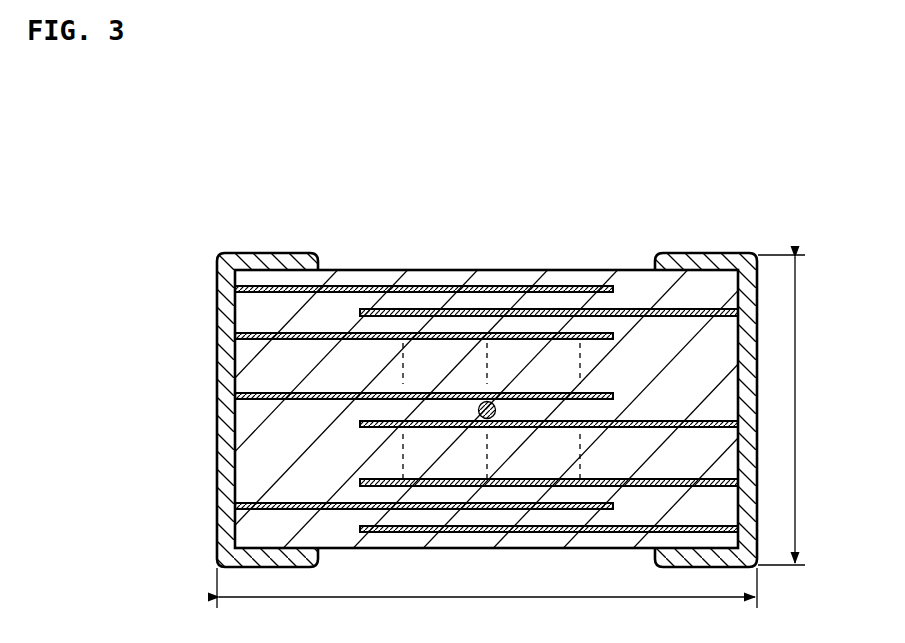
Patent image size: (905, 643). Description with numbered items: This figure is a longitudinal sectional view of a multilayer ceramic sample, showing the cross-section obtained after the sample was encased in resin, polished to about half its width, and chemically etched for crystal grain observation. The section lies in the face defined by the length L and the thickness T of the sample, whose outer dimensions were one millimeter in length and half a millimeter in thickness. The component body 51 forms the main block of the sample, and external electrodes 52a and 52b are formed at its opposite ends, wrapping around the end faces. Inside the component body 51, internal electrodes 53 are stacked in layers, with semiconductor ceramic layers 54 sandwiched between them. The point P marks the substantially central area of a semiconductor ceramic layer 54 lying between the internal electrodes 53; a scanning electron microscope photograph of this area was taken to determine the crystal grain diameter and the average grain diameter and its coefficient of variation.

The component body 51 is at (523, 268).
The external electrode 52a is at (280, 253).
The external electrode 52b is at (708, 253).
The internal electrodes 53 is at (325, 392).
The semiconductor ceramic layer 54 is at (407, 411).
The substantially central area of the semiconductor ceramic layer P is at (481, 403).
The thickness T is at (781, 410).
The length L is at (487, 582).